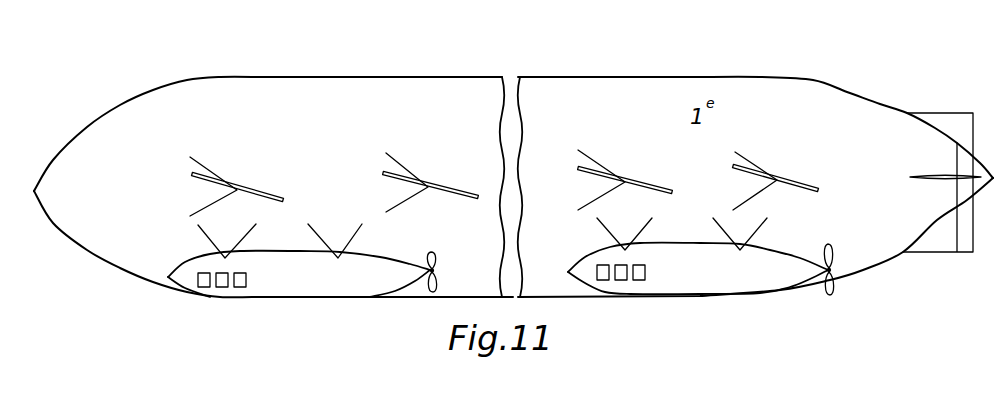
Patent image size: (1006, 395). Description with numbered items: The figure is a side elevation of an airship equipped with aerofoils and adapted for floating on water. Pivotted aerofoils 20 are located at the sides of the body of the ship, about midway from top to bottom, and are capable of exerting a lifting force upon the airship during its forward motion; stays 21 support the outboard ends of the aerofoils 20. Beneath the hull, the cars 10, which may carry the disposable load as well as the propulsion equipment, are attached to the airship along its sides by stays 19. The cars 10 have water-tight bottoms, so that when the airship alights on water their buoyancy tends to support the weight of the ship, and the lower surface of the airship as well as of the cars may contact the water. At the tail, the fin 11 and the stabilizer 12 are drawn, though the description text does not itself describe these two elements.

The car 10 is at (501, 270).
The vertical fin 11 is at (929, 113).
The horizontal stabilizer 12 is at (927, 180).
The stay 19 is at (356, 240).
The aerofoil 20 is at (258, 191).
The stay 21 is at (596, 157).